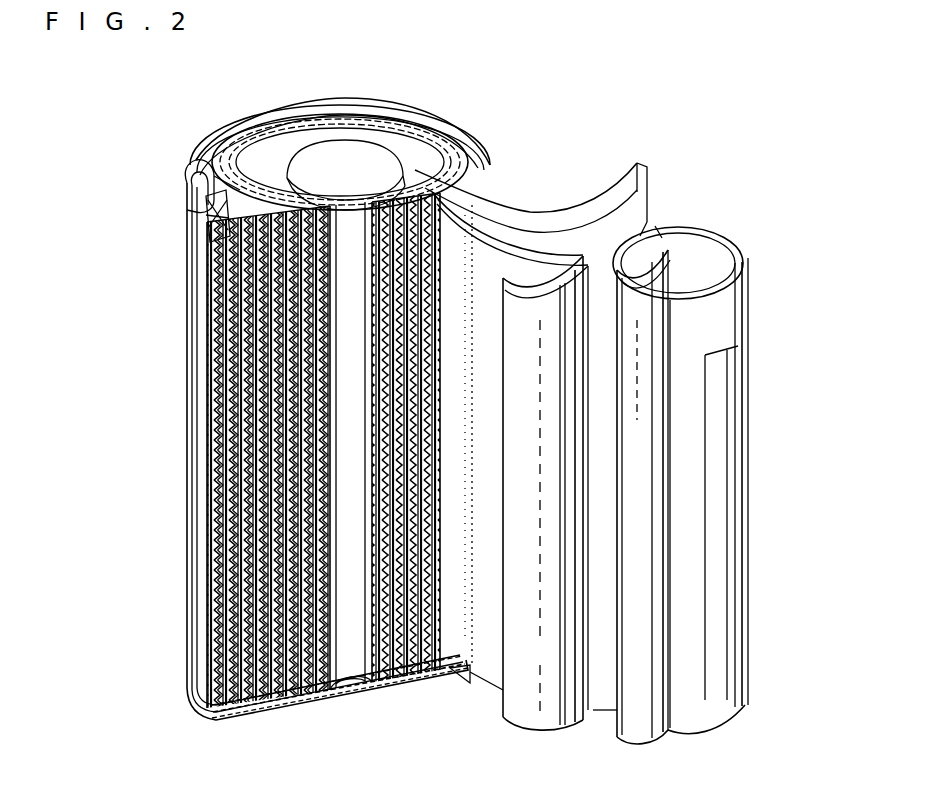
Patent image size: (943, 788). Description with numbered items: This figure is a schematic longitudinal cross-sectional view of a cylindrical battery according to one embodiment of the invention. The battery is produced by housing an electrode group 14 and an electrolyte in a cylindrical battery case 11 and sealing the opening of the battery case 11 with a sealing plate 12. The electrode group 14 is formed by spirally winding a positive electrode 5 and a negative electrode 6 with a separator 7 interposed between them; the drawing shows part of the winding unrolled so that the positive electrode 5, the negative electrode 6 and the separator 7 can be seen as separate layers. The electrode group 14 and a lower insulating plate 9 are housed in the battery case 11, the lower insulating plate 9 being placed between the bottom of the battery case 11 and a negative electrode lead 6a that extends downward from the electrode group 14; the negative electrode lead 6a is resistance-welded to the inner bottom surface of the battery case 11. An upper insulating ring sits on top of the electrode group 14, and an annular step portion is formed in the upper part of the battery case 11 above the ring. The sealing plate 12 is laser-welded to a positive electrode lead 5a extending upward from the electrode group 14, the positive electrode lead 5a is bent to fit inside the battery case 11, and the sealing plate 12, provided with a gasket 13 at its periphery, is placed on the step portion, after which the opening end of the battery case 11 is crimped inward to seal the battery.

The positive electrode 5 is at (575, 617).
The positive electrode lead 5a is at (206, 236).
The negative electrode 6 is at (715, 316).
The negative electrode lead 6a is at (712, 382).
The separator 7 is at (600, 186).
The lower insulating plate 9 is at (330, 690).
The battery case 11 is at (190, 500).
The sealing plate 12 is at (438, 142).
The gasket 13 is at (198, 180).
The electrode group 14 is at (733, 243).